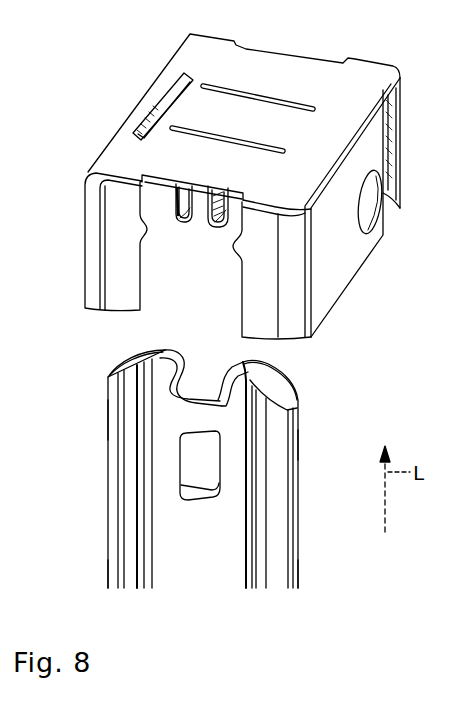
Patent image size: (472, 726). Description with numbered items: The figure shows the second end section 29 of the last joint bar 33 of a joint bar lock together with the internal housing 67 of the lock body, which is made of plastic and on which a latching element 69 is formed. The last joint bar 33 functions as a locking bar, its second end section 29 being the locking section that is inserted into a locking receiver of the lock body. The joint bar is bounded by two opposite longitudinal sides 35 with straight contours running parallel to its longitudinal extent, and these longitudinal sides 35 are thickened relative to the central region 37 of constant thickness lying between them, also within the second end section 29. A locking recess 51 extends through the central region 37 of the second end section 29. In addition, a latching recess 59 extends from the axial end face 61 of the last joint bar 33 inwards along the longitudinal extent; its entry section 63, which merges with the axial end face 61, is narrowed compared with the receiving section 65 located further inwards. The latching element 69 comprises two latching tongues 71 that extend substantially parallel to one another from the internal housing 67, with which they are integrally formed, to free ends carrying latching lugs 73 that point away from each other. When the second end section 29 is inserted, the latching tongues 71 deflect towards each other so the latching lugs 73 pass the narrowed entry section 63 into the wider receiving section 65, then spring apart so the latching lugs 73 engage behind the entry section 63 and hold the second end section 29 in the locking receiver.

The second end section 29 is at (227, 506).
The last joint bar 33 is at (167, 502).
The longitudinal sides 35 is at (113, 407).
The central region 37 is at (183, 557).
The locking recess 51 is at (180, 468).
The latching recess 59 is at (227, 393).
The axial end face 61 is at (160, 350).
The entry section 63 is at (179, 360).
The receiving section 65 is at (192, 392).
The internal housing 67 is at (220, 186).
The latching element 69 is at (162, 204).
The latching tongues 71 is at (193, 183).
The latching lugs 73 is at (178, 218).